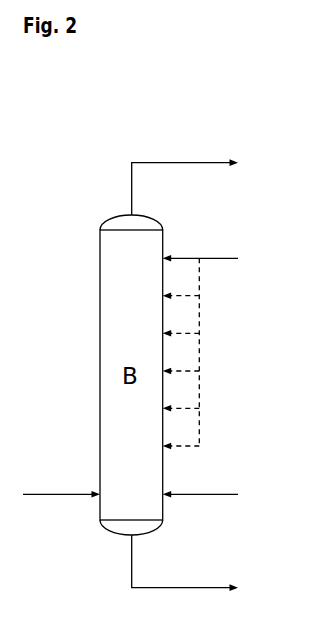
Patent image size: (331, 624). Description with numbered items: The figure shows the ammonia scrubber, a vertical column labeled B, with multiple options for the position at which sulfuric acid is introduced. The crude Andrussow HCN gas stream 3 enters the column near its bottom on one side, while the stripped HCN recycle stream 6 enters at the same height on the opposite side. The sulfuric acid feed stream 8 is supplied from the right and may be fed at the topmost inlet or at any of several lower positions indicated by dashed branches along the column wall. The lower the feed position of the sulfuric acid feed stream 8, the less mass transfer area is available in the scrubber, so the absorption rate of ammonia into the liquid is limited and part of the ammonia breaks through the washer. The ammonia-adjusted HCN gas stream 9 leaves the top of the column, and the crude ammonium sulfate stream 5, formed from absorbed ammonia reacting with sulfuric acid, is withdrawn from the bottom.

The crude Andrussow HCN gas stream 3 is at (61, 482).
The crude ammonium sulfate stream 5 is at (185, 563).
The stripped HCN recycle stream 6 is at (200, 482).
The sulfuric acid feed stream 8 is at (200, 340).
The ammonia-adjusted HCN gas stream 9 is at (185, 175).